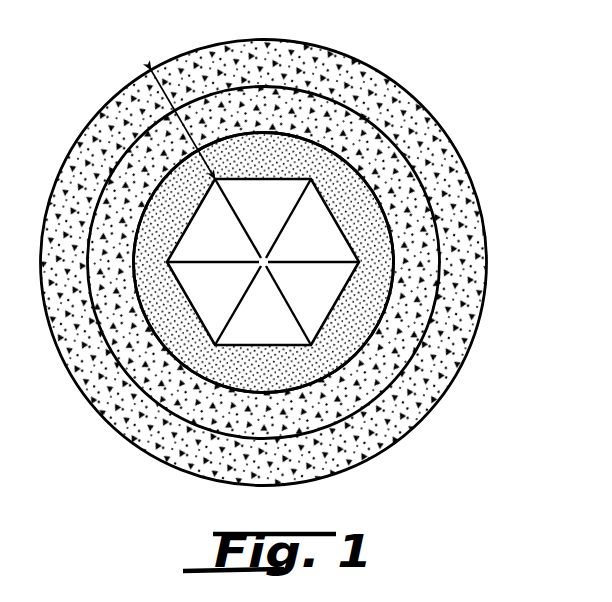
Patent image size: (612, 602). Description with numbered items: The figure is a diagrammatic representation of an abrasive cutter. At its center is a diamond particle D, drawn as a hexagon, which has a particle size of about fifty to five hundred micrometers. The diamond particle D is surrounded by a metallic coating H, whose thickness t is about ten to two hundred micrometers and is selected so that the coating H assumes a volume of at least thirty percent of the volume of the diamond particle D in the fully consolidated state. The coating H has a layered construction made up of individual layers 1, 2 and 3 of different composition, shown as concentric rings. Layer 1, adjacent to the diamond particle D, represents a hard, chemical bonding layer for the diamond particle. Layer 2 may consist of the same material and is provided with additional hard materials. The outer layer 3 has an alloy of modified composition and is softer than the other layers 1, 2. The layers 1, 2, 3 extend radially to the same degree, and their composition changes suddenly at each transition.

The layer 1 is at (298, 153).
The layer 2 is at (368, 153).
The outer layer 3 is at (432, 187).
The thickness t is at (183, 125).
The metallic coating H is at (203, 380).
The diamond particle D is at (277, 217).